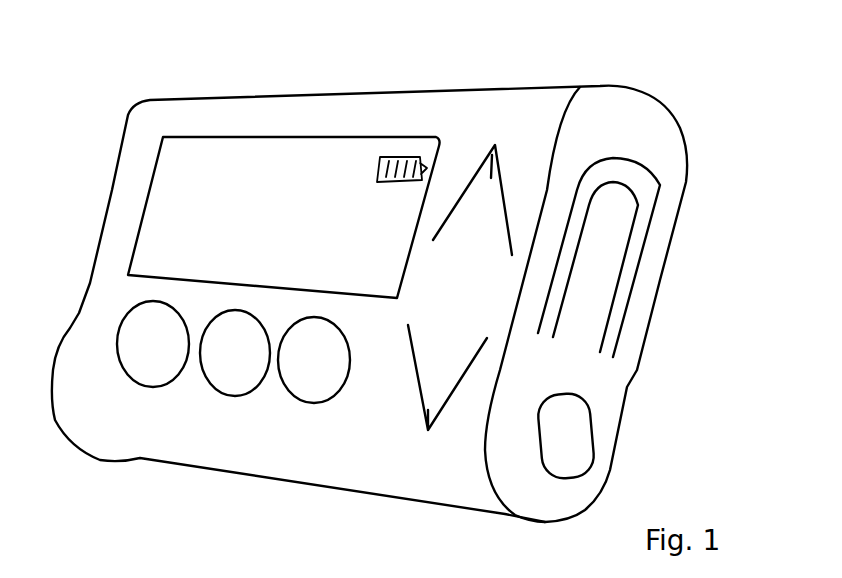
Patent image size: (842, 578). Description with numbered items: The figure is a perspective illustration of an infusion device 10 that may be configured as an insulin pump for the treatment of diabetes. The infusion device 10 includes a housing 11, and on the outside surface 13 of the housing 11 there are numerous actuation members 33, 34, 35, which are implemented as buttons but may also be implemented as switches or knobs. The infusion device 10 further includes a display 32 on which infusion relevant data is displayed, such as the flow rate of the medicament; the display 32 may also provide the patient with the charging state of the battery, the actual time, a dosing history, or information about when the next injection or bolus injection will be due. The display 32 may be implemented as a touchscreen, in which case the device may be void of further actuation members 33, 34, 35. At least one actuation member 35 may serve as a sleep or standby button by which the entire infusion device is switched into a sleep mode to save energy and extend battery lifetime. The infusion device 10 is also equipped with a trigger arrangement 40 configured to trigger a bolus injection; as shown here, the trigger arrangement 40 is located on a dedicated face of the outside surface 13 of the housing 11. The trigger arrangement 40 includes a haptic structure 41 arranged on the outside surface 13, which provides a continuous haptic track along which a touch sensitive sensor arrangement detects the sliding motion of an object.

The infusion device 10 is at (423, 87).
The housing 11 is at (190, 100).
The outside surface 13 is at (620, 387).
The display 32 is at (225, 157).
The actuation members 33 is at (157, 383).
The actuation members 34 is at (494, 145).
The actuation member 35 is at (577, 440).
The trigger arrangement 40 is at (642, 138).
The haptic structure 41 is at (636, 305).